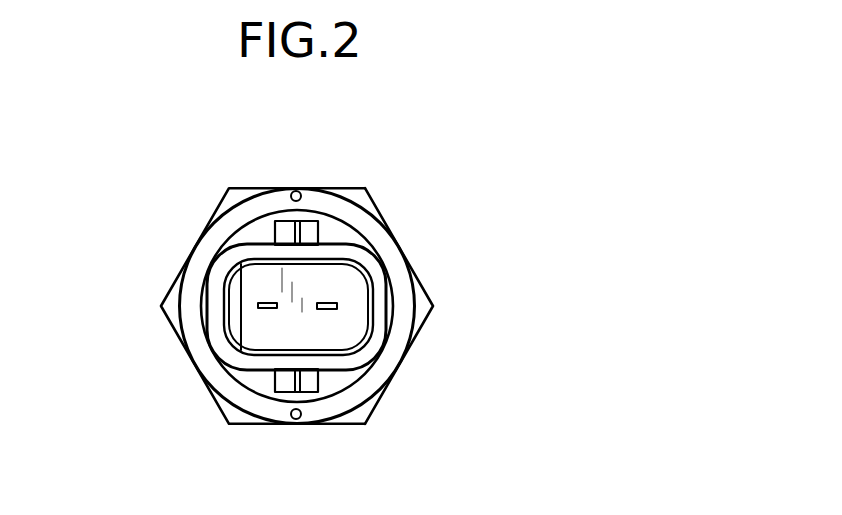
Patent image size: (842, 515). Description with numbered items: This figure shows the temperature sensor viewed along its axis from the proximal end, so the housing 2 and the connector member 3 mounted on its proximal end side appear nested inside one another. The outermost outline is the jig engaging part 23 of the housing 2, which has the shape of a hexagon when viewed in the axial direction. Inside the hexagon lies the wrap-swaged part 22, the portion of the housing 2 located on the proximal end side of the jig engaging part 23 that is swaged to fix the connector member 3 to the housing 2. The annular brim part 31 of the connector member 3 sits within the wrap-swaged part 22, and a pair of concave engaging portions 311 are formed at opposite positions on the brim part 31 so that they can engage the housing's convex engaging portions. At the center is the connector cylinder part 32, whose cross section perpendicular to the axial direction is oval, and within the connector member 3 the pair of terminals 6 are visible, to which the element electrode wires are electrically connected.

The housing 2 is at (186, 254).
The wrap-swaged part 22 is at (238, 217).
The jig engaging part 23 is at (436, 289).
The connector member 3 is at (356, 255).
The brim part 31 is at (248, 238).
The concave engaging portions 311 is at (299, 190).
The connector cylinder part 32 is at (263, 250).
The terminals 6 is at (266, 309).